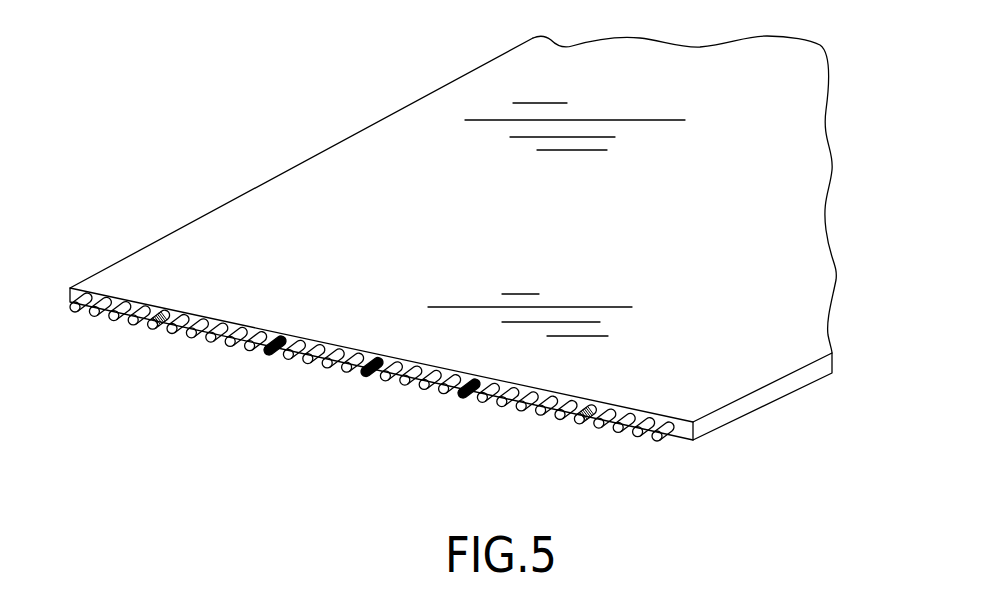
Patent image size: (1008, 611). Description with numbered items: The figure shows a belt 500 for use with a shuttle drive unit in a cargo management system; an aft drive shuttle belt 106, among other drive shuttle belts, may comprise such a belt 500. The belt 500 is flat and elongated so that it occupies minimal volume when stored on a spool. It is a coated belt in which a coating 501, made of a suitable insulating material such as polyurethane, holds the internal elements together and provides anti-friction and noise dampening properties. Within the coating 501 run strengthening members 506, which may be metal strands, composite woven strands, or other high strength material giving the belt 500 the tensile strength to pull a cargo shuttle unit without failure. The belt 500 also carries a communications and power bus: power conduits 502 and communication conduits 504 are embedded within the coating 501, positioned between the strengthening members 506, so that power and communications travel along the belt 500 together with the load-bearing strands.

The belt 500 is at (330, 175).
The aft drive shuttle belt 106 is at (688, 358).
The coating 501 is at (715, 422).
The power conduits 502 is at (160, 332).
The communication conduits 504 is at (463, 393).
The strengthening members 506 is at (653, 437).